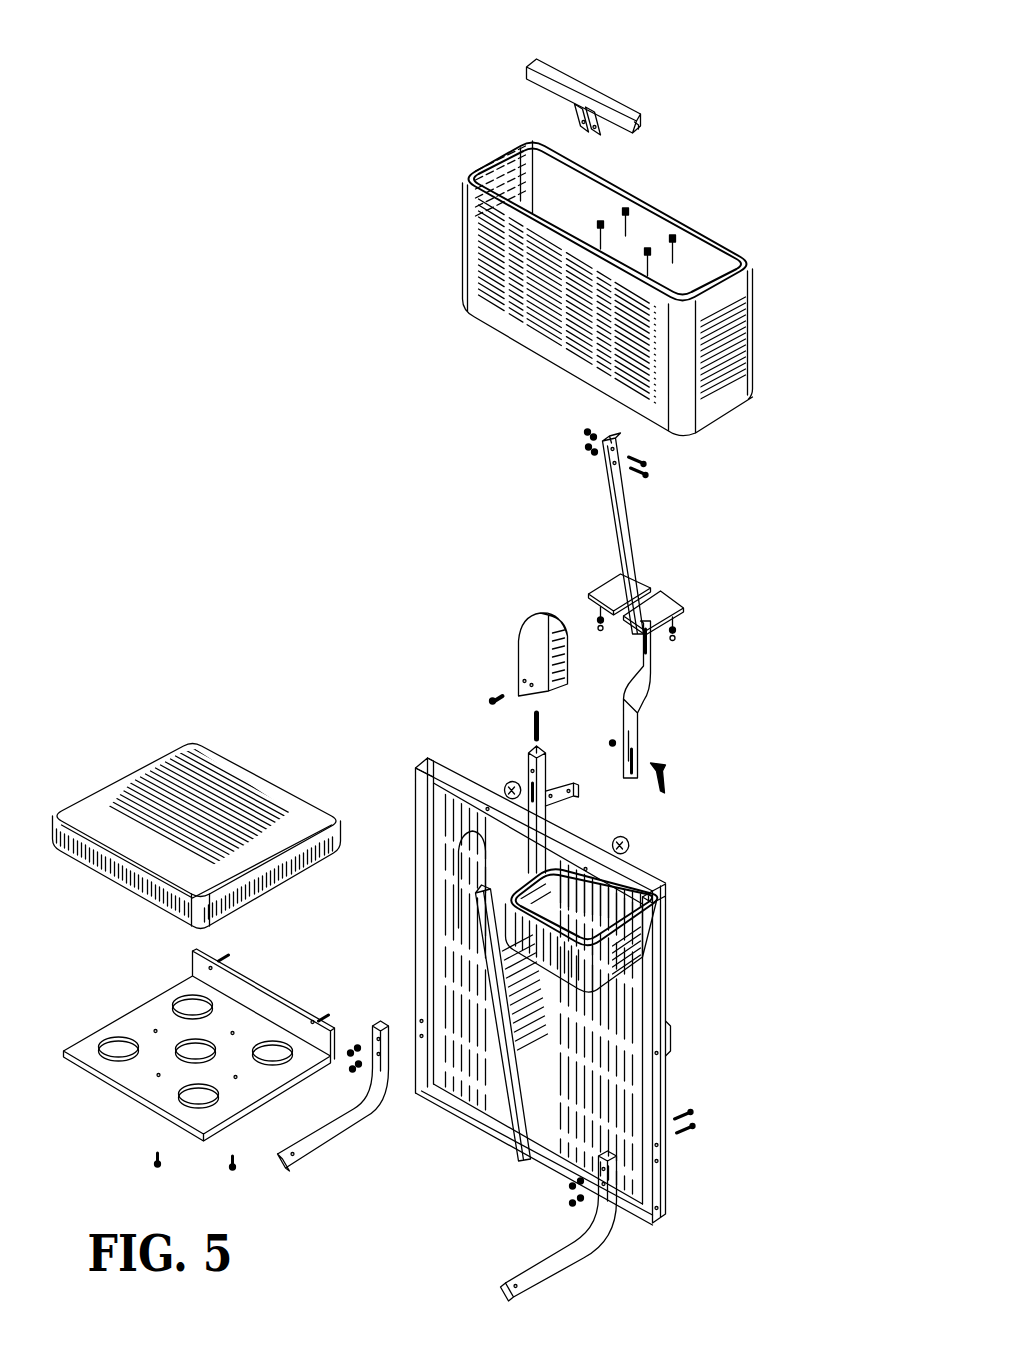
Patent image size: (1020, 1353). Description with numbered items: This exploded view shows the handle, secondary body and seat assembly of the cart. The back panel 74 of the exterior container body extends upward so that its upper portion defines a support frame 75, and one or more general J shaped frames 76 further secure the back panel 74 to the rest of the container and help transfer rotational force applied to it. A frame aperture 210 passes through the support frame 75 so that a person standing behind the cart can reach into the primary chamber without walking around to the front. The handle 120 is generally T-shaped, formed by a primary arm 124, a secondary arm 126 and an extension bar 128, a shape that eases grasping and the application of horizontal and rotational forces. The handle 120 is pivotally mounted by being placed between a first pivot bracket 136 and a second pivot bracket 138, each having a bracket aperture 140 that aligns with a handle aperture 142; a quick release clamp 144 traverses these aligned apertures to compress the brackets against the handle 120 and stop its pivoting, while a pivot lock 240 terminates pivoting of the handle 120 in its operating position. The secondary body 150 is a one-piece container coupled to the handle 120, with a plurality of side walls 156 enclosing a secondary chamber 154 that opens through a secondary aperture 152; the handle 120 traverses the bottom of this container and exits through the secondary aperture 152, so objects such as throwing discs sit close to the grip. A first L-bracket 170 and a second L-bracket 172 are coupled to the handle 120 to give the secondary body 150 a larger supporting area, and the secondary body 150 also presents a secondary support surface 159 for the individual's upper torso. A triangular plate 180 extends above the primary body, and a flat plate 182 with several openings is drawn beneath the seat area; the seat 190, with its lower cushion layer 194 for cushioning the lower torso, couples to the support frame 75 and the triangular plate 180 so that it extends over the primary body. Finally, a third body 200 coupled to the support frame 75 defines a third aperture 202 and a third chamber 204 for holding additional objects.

The back panel 74 is at (533, 956).
The support frame 75 is at (660, 994).
The general J shaped frame 76 is at (325, 1145).
The handle 120 is at (665, 531).
The primary arm 124 is at (612, 96).
The secondary arm 126 is at (556, 70).
The extension bar 128 is at (625, 503).
The first pivot bracket 136 is at (585, 822).
The second pivot bracket 138 is at (555, 782).
The bracket aperture 140 is at (565, 800).
The handle aperture 142 is at (648, 754).
The quick release clamp 144 is at (665, 788).
The secondary body 150 is at (604, 288).
The secondary aperture 152 is at (690, 224).
The secondary chamber 154 is at (640, 206).
The side walls 156 is at (500, 250).
The secondary support surface 159 is at (512, 322).
The first L-bracket 170 is at (676, 608).
The second L-bracket 172 is at (606, 590).
The triangular plate 180 is at (493, 1000).
The shelf 182 is at (140, 1104).
The seat 190 is at (196, 815).
The lower cushion layer 194 is at (160, 800).
The third body 200 is at (633, 920).
The third aperture 202 is at (648, 916).
The third chamber 204 is at (560, 910).
The frame aperture 210 is at (445, 840).
The pivot lock 240 is at (528, 618).